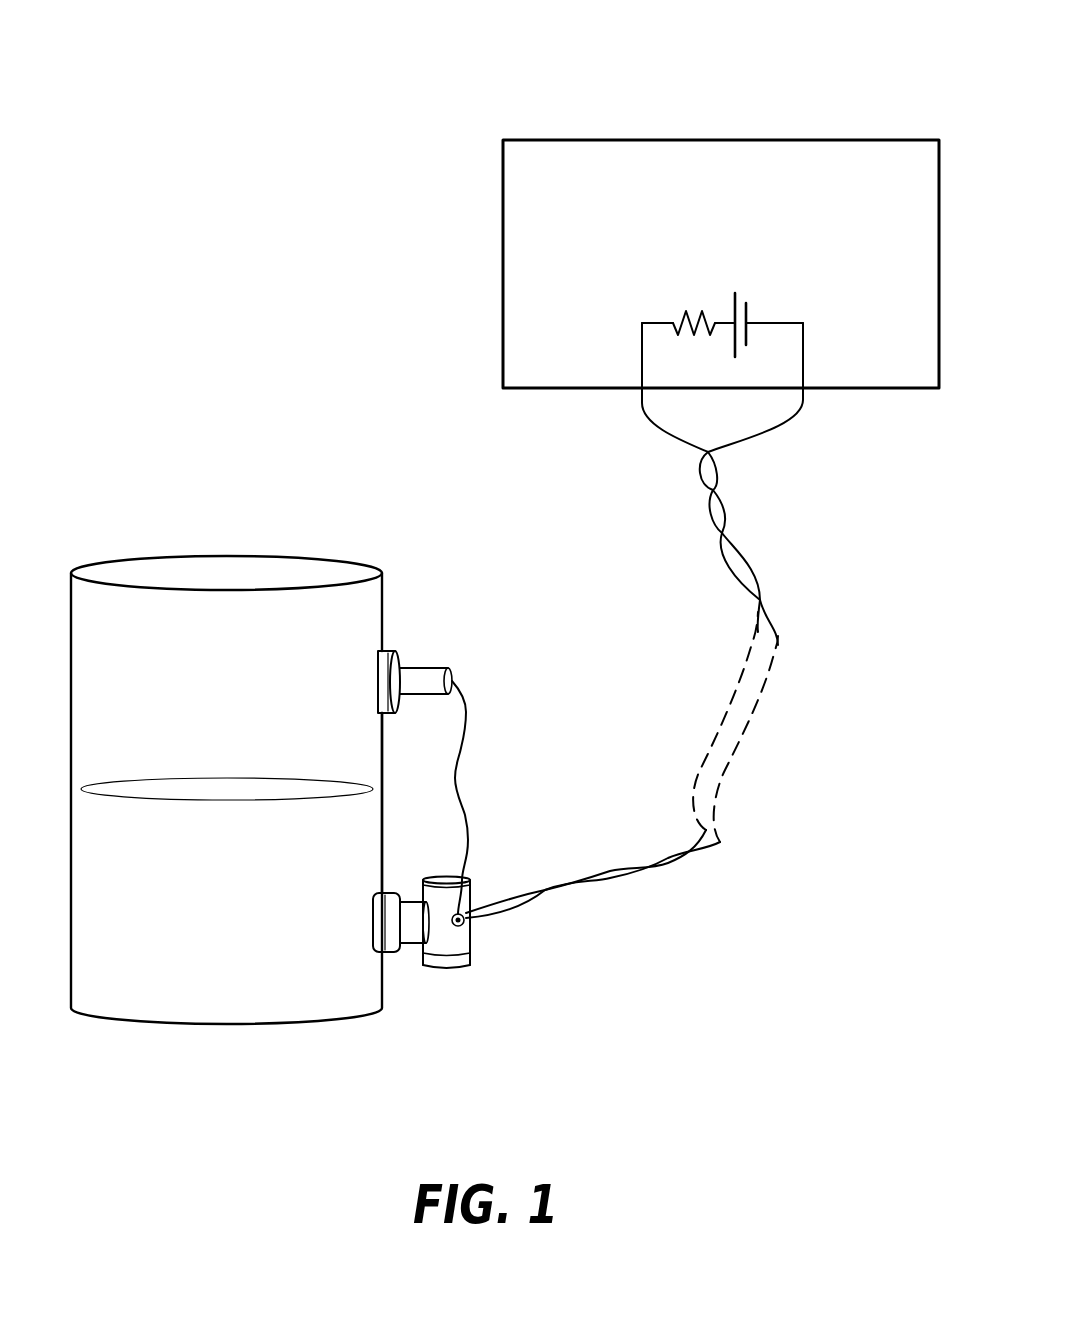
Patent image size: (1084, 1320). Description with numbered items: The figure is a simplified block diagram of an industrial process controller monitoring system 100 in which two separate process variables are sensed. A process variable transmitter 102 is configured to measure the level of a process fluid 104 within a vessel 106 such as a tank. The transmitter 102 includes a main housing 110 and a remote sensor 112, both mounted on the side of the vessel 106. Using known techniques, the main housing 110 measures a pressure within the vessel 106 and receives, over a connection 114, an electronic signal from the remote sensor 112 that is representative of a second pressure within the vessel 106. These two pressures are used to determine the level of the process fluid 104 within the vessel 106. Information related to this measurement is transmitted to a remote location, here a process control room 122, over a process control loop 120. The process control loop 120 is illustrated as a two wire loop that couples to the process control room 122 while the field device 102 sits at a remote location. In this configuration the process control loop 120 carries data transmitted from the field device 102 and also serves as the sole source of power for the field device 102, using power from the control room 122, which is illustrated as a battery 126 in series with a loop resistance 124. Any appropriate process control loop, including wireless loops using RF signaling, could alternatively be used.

The industrial process controller monitoring system 100 is at (239, 112).
The process variable transmitter 102 is at (486, 865).
The process fluid 104 is at (243, 865).
The vessel 106 is at (240, 1023).
The main housing 110 is at (470, 965).
The remote sensor 112 is at (412, 667).
The connection 114 is at (462, 743).
The process control loop 120 is at (694, 862).
The process control room 122 is at (503, 331).
The loop resistance 124 is at (680, 312).
The battery 126 is at (768, 322).